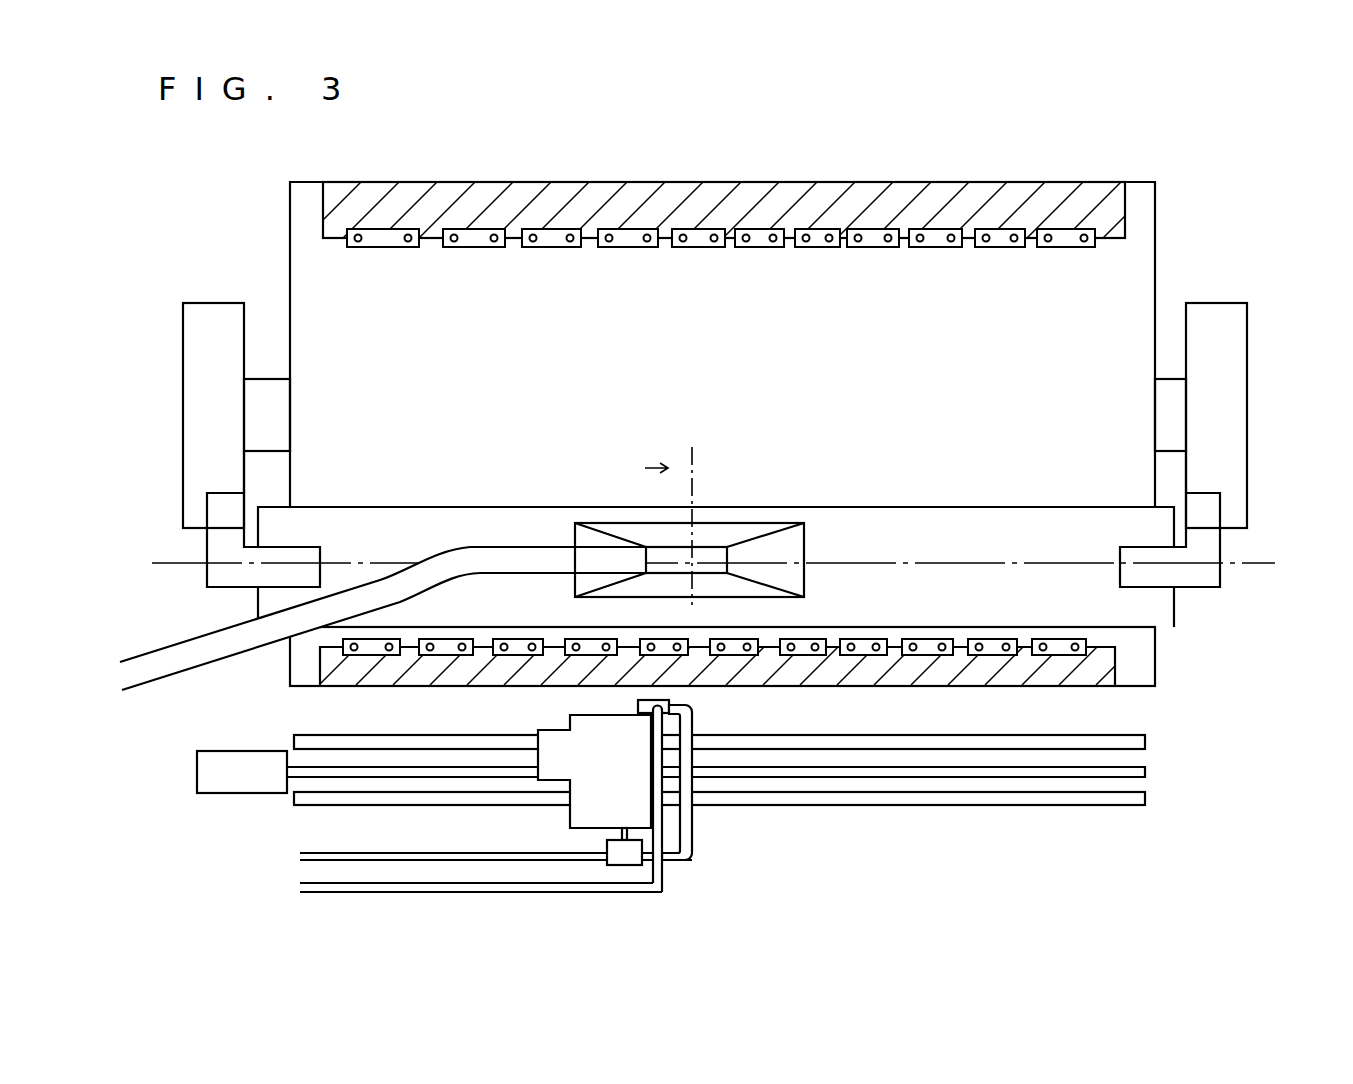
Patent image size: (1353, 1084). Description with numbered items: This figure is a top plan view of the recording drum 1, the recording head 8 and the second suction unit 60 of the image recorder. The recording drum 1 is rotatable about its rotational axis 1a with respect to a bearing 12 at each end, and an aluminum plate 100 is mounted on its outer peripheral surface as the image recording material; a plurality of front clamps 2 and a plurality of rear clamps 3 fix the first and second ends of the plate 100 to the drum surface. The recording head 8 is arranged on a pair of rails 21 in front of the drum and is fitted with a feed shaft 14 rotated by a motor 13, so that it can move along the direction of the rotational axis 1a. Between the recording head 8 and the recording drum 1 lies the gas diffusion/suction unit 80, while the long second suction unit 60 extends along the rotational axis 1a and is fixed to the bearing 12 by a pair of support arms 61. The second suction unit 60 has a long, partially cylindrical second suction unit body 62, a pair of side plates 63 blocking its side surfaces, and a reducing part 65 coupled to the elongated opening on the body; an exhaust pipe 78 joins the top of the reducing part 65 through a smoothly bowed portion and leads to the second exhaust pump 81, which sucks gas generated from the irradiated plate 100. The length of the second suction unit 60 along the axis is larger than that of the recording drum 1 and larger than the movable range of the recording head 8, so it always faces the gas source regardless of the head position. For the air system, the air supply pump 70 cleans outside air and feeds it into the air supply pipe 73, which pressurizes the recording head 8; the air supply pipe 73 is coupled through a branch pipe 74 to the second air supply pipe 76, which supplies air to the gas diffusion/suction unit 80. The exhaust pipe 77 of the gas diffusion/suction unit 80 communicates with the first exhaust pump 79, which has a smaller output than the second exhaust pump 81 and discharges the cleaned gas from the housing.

The aluminum plate 100 is at (915, 182).
The recording drum 1 is at (1155, 195).
The rotational axis 1a is at (270, 379).
The rear clamps 3 is at (1065, 248).
The bearing 12 is at (183, 405).
The second suction unit 60 is at (845, 490).
The second suction unit body 62 is at (988, 508).
The support arms 61 is at (207, 573).
The side plates 63 is at (255, 598).
The reducing part 65 is at (745, 523).
The exhaust pipe 78 is at (522, 547).
The second exhaust pump 81 is at (123, 673).
The front clamps 2 is at (1088, 633).
The recording head 8 is at (709, 838).
The gas diffusion/suction unit 80 is at (638, 705).
The second air supply pipe 76 is at (692, 705).
The exhaust pipe 77 is at (660, 880).
The rails 21 is at (1145, 741).
The feed shaft 14 is at (1145, 772).
The motor 13 is at (237, 793).
The air supply pipe 73 is at (560, 853).
The branch pipe 74 is at (635, 865).
The air supply pump 70 is at (277, 862).
The first exhaust pump 79 is at (290, 893).